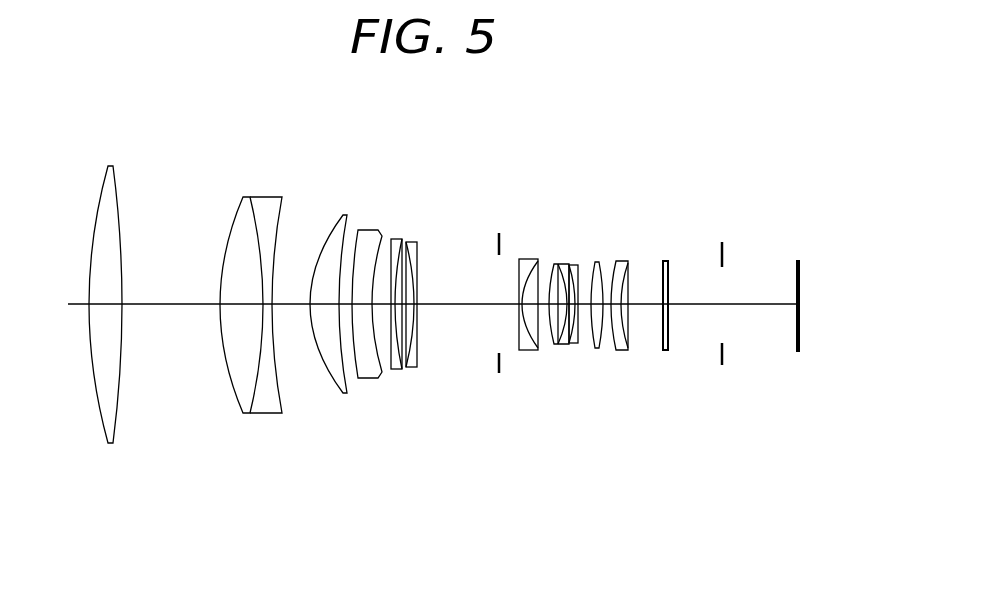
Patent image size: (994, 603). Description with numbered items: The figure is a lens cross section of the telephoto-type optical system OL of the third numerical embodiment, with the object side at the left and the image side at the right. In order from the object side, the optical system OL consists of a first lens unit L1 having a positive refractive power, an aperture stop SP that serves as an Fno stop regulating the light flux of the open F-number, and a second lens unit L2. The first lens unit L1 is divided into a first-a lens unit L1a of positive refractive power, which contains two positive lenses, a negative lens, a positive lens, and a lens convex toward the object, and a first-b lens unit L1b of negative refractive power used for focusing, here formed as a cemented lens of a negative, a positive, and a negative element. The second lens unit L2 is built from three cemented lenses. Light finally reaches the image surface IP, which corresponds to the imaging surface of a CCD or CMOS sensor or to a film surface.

The optical system OL is at (650, 150).
The first lens unit L1 is at (453, 515).
The first-a lens unit L1a is at (383, 457).
The first-b lens unit L1b is at (432, 457).
The second lens unit L2 is at (635, 515).
The aperture stop SP is at (509, 219).
The image surface IP is at (798, 335).